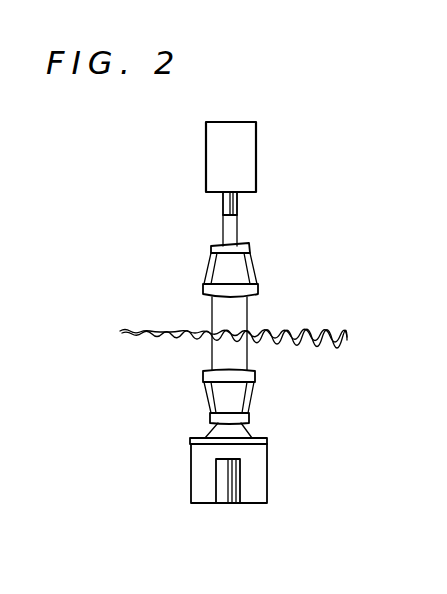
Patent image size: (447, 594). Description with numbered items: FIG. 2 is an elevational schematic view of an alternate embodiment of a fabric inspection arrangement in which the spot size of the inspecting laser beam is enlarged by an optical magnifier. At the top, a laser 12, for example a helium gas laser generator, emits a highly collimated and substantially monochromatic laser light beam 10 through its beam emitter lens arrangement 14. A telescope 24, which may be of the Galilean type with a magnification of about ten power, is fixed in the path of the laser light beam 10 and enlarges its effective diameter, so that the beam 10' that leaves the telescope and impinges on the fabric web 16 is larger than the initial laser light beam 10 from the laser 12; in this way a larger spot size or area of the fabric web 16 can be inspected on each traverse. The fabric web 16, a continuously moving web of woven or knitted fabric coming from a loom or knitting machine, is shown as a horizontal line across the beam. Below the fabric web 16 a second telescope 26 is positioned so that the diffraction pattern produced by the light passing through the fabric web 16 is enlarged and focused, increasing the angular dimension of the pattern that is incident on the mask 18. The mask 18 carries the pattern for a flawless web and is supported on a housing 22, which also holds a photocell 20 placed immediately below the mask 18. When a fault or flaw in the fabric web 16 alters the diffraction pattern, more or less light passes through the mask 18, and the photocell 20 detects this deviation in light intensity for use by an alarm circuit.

The laser 12 is at (252, 155).
The beam emitter lens arrangement 14 is at (238, 200).
The laser light beam 10 is at (261, 232).
The telescope 24 is at (251, 270).
The enlarged beam 10' is at (259, 333).
The fabric web 16 is at (320, 333).
The second telescope 26 is at (255, 398).
The mask 18 is at (263, 438).
The housing 22 is at (268, 470).
The photocell 20 is at (240, 490).